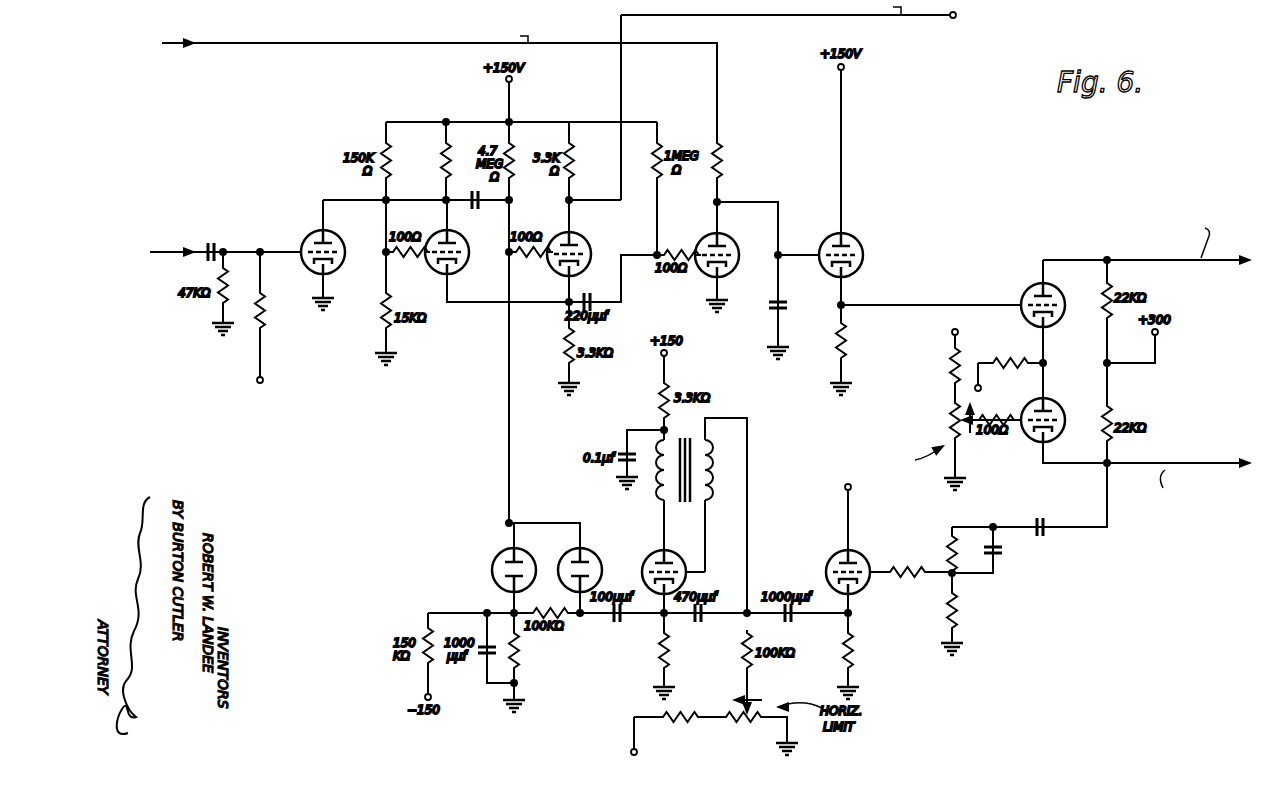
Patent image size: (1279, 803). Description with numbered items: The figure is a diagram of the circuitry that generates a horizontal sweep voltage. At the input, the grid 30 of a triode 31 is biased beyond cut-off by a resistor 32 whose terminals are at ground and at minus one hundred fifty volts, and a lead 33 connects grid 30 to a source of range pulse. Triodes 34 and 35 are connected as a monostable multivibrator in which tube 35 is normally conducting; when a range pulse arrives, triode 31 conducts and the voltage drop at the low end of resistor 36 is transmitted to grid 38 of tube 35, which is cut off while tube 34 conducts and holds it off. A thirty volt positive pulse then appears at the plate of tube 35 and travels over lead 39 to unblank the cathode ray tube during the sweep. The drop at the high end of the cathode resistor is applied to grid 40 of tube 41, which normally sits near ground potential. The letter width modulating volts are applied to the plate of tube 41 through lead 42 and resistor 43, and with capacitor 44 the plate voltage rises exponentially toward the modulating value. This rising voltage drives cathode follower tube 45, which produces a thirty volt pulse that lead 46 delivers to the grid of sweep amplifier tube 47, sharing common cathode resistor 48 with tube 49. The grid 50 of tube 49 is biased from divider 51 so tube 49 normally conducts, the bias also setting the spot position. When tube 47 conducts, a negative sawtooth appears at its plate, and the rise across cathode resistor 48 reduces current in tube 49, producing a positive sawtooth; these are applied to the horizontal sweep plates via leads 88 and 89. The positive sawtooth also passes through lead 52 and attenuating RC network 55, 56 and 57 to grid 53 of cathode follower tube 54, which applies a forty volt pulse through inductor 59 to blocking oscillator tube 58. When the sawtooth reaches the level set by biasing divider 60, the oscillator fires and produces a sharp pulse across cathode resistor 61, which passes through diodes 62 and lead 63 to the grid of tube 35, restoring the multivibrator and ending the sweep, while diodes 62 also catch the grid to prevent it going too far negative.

The grid 30 is at (310, 255).
The triode 31 is at (321, 255).
The resistor 32 is at (273, 326).
The lead 33 is at (222, 256).
The triode 34 is at (484, 252).
The triode 35 is at (552, 251).
The resistor 36 is at (447, 161).
The grid 38 is at (563, 251).
The lead 39 is at (788, 100).
The grid 40 is at (703, 257).
The tube 41 is at (718, 257).
The lead 42 is at (439, 82).
The resistor 43 is at (739, 168).
The capacitor 44 is at (775, 330).
The cathode follower tube 45 is at (860, 314).
The lead 46 is at (931, 289).
The sweep amplifier tube 47 is at (1026, 311).
The cathode resistor 48 is at (1021, 374).
The tube 49 is at (1136, 415).
The grid 50 is at (1136, 415).
The divider 51 is at (928, 401).
The lead 52 is at (1059, 530).
The grid 53 is at (866, 591).
The tube 54 is at (866, 591).
The RC network element 55 is at (996, 555).
The RC network element 56 is at (929, 548).
The RC network element 57 is at (723, 415).
The blocking oscillator tube 58 is at (661, 556).
The inductor 59 is at (701, 515).
The biasing divider 60 is at (704, 742).
The cathode resistor 61 is at (659, 656).
The diodes 62 is at (547, 603).
The lead 63 is at (530, 461).
The lead 88 is at (1147, 261).
The lead 89 is at (1180, 468).